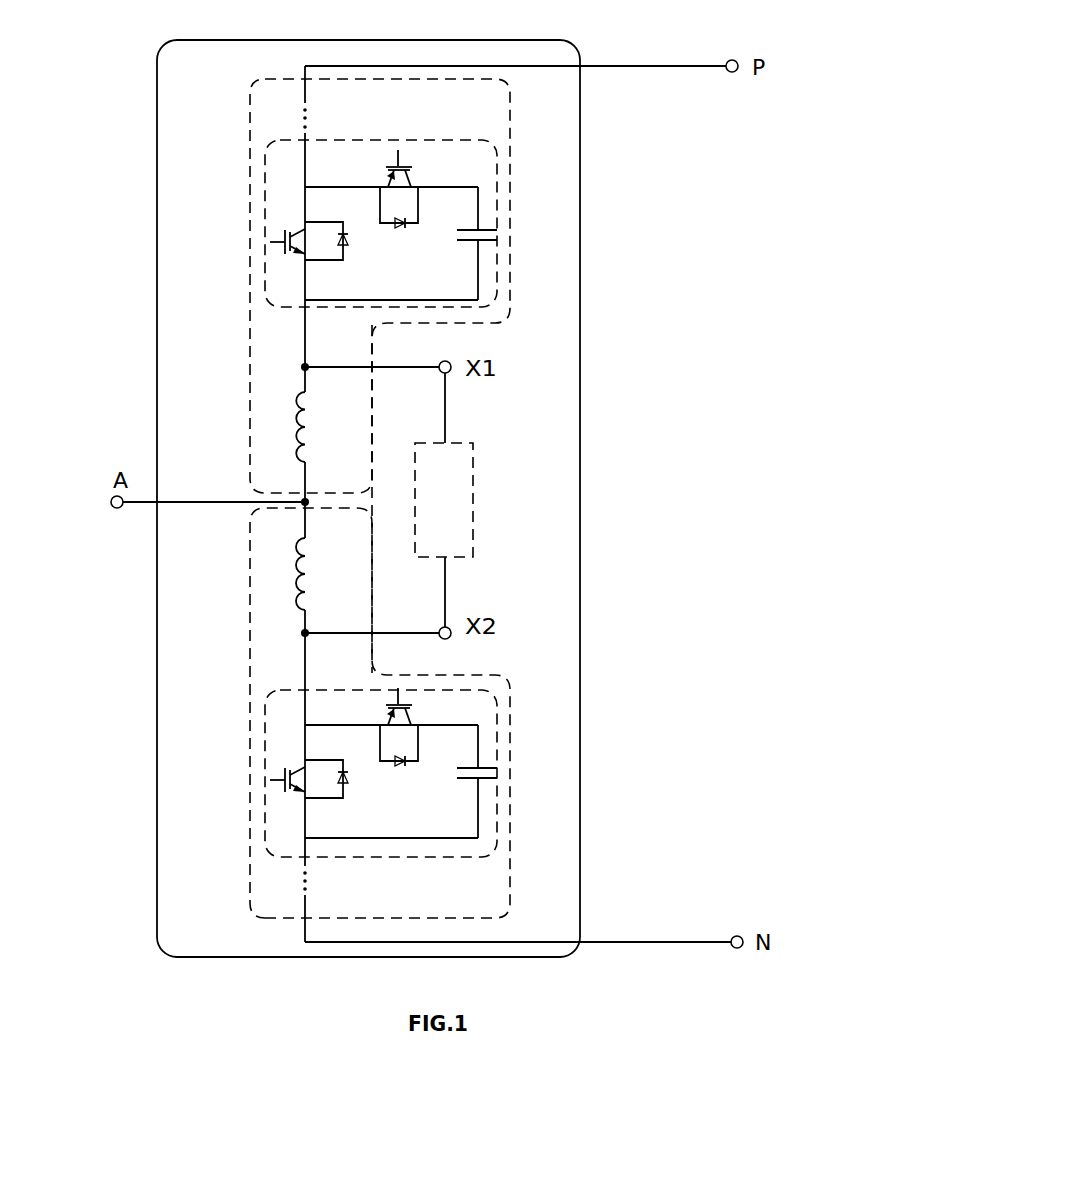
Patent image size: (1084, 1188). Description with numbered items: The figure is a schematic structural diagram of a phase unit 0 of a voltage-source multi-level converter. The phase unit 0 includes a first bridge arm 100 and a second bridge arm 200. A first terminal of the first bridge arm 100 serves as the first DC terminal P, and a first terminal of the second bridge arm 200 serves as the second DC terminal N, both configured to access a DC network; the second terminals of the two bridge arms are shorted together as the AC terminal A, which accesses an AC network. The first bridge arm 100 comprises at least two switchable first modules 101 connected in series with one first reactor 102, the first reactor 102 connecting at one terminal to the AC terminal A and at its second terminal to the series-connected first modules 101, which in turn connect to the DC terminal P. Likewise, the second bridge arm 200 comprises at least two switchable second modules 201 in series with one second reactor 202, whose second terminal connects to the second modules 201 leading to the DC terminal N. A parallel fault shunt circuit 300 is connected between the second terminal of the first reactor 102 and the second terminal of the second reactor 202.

The phase unit 0 is at (580, 492).
The first bridge arm 100 is at (248, 203).
The first module 101 is at (495, 193).
The first reactor 102 is at (285, 425).
The second bridge arm 200 is at (248, 705).
The second module 201 is at (496, 758).
The second reactor 202 is at (285, 578).
The parallel fault shunt circuit 300 is at (422, 499).